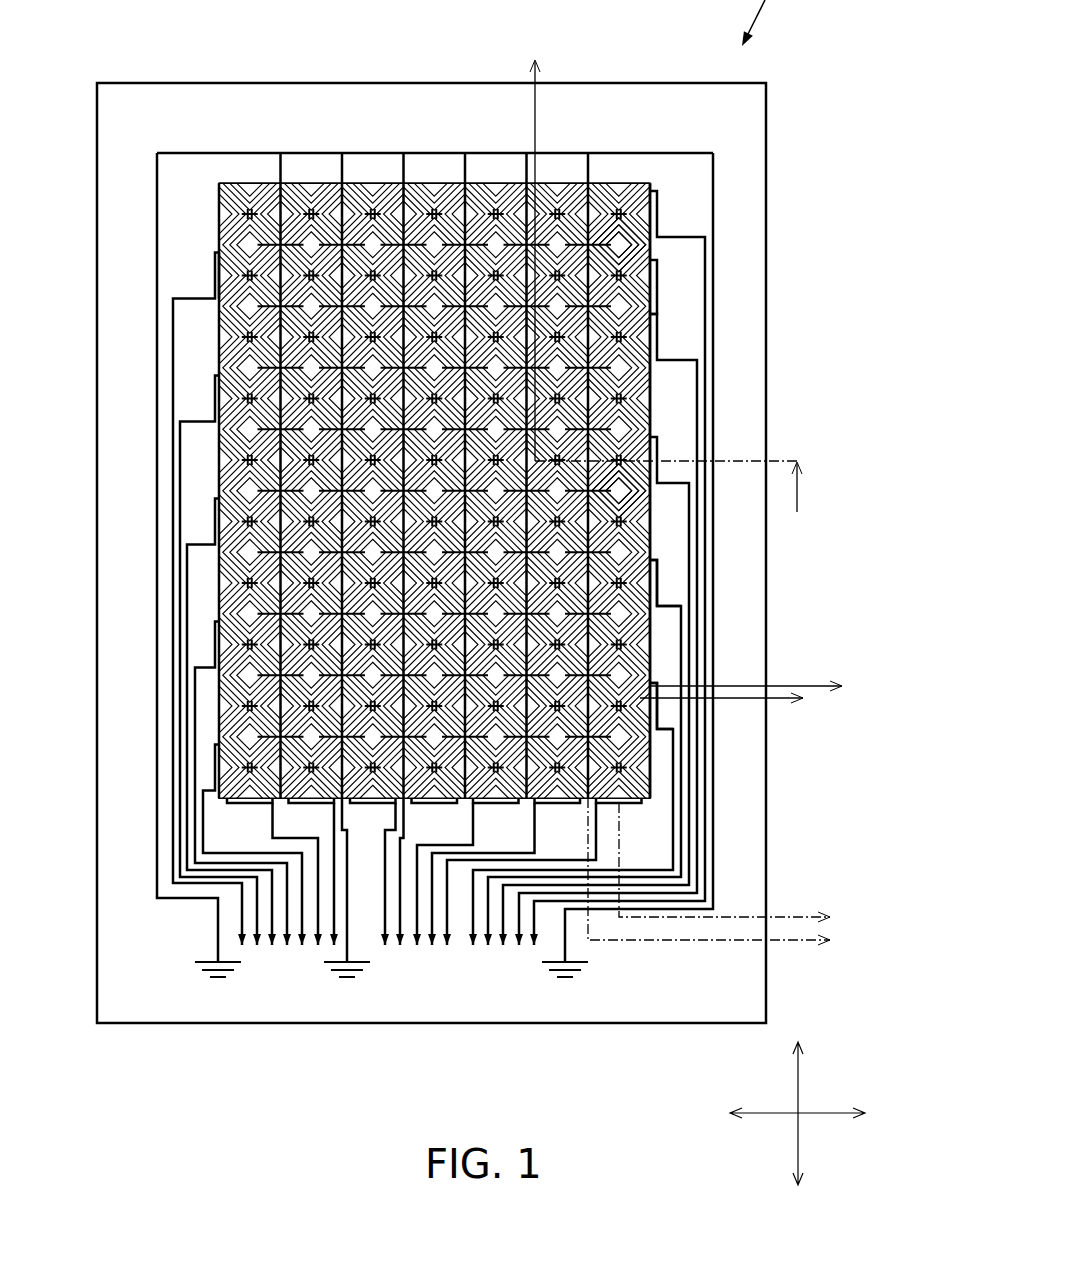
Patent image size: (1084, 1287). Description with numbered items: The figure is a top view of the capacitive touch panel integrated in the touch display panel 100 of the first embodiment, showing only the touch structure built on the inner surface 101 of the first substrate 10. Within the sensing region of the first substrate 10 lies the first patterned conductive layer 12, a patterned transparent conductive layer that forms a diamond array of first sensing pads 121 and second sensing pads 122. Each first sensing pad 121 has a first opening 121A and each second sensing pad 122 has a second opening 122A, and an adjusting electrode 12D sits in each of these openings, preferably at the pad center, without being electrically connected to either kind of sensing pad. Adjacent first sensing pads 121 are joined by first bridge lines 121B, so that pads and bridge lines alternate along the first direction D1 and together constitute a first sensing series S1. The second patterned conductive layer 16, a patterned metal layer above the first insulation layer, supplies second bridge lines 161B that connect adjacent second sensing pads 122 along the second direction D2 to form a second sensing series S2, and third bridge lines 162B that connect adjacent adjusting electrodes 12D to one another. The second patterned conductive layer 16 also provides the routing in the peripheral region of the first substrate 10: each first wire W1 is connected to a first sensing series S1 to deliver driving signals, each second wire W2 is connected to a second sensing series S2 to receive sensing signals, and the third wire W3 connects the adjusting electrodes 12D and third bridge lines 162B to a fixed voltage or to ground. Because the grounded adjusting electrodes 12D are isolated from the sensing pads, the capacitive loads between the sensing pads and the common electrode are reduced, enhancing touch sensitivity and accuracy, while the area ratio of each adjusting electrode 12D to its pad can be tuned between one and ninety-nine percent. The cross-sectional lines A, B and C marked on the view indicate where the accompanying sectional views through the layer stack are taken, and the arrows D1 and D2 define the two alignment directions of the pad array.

The touch display device 100 is at (753, 23).
The first substrate 10 is at (768, 172).
The inner surface 101 is at (745, 120).
The first patterned conductive layer 12 is at (540, 438).
The first sensing pad 121 is at (623, 367).
The second sensing pad 122 is at (653, 317).
The adjusting electrode 12D is at (603, 282).
The first opening 121A is at (612, 240).
The first bridge line 121B is at (642, 527).
The second opening 122A is at (652, 287).
The second patterned conductive layer 16 is at (505, 558).
The first wire W1 is at (458, 862).
The second wire W2 is at (705, 805).
The third wire W3 is at (435, 152).
The second bridge line 161B is at (642, 590).
The third bridge line 162B is at (642, 630).
The first sensing series S1 is at (556, 183).
The second sensing series S2 is at (657, 213).
The cross-sectional line A-A' A is at (668, 290).
The cross-sectional line B-B' B is at (727, 814).
The cross-sectional line C-C' C is at (727, 809).
The first direction D1 is at (798, 1082).
The second direction D2 is at (815, 1113).